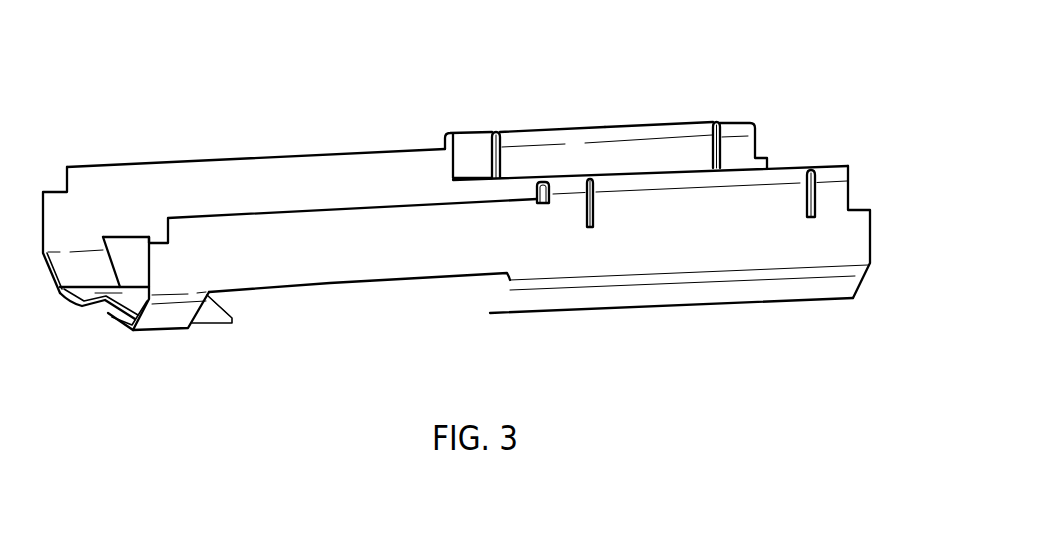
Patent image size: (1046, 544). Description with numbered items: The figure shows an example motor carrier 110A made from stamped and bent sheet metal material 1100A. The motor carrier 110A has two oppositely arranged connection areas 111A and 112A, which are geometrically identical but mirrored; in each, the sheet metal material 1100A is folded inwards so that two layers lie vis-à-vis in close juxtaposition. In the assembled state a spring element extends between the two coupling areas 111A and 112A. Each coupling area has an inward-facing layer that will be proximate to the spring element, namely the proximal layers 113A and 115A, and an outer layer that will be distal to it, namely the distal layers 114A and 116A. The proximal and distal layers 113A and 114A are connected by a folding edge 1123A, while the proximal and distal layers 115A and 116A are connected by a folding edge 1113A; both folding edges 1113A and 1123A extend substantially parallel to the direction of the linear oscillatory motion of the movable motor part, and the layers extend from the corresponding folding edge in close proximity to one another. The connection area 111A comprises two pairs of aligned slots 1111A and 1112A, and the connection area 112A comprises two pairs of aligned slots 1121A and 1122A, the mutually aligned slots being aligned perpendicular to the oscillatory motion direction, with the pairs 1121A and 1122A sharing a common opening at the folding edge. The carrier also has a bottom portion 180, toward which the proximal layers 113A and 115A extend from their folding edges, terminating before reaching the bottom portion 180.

The motor carrier 110A is at (797, 319).
The sheet metal material 1100A is at (287, 252).
The connection area 111A is at (833, 175).
The aligned slots 1111A is at (593, 230).
The aligned slots 1112A is at (815, 207).
The folding edge 1113A is at (787, 161).
The connection area 112A is at (738, 128).
The aligned slots 1121A is at (492, 131).
The aligned slots 1122A is at (715, 121).
The folding edge 1123A is at (623, 125).
The proximal layer 113A is at (568, 161).
The distal layer 114A is at (470, 138).
The proximal layer 115A is at (535, 191).
The distal layer 116A is at (705, 228).
The bottom portion 180 is at (652, 307).